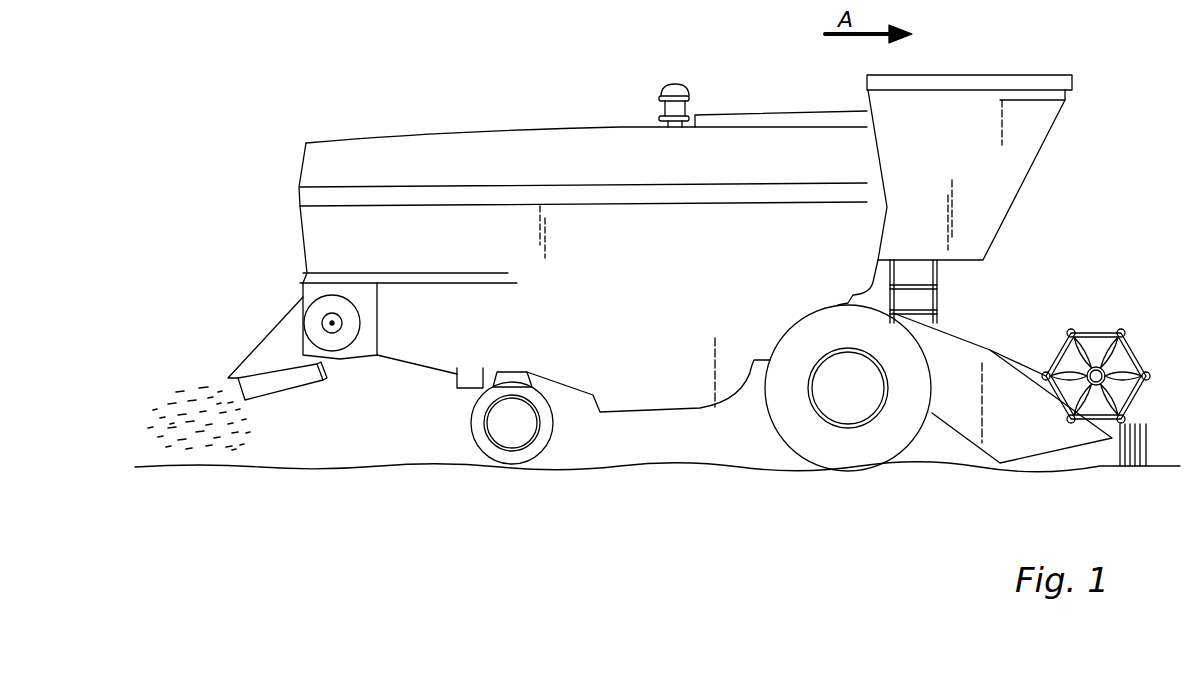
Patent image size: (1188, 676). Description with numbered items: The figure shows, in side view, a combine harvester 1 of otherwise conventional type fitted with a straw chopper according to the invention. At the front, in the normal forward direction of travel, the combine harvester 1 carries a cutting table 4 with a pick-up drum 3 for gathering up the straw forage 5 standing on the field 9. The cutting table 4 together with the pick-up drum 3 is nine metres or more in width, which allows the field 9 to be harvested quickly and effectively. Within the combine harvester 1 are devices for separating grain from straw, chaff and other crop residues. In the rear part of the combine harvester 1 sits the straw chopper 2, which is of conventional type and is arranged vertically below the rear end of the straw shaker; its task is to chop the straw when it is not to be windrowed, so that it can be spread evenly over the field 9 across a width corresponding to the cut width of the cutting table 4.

The combine harvester 1 is at (610, 110).
The straw chopper 2 is at (377, 308).
The pick-up drum 3 is at (1048, 362).
The cutting table 4 is at (955, 345).
The straw forage 5 is at (1148, 437).
The field 9 is at (188, 468).